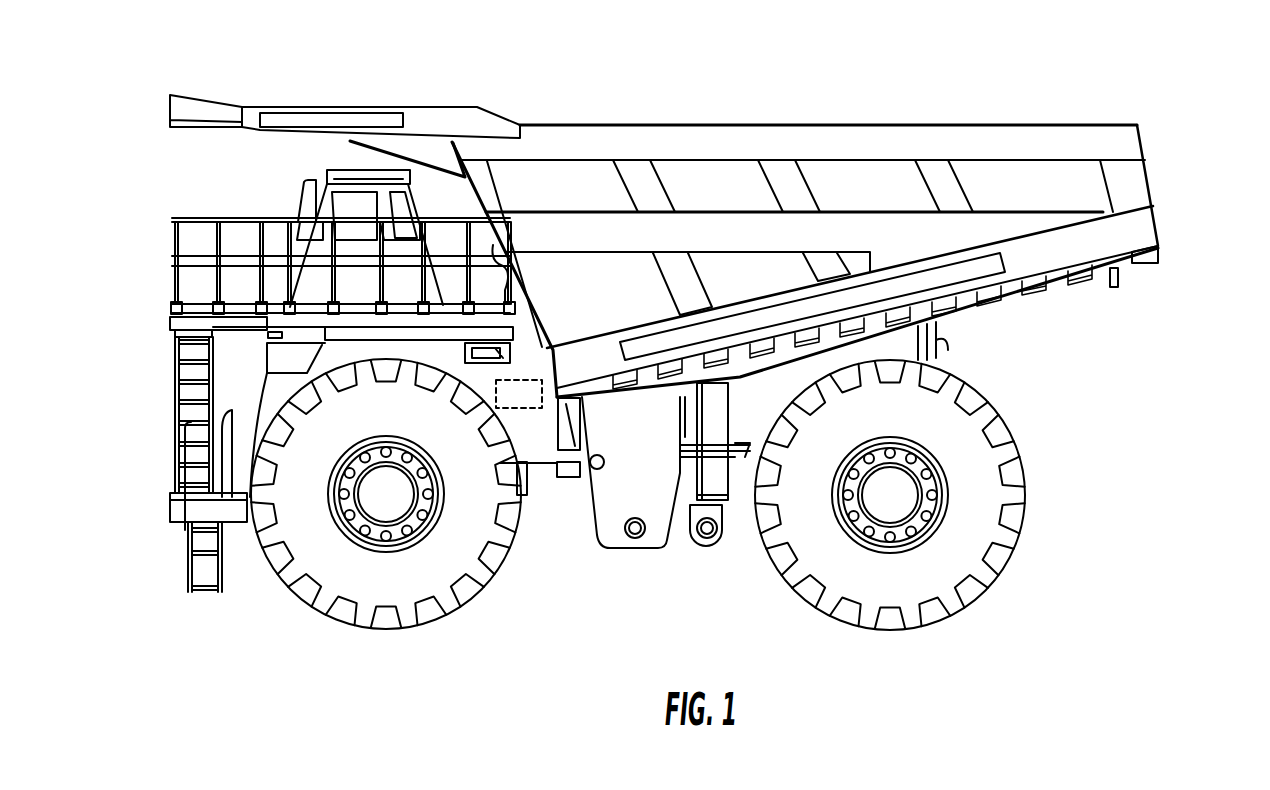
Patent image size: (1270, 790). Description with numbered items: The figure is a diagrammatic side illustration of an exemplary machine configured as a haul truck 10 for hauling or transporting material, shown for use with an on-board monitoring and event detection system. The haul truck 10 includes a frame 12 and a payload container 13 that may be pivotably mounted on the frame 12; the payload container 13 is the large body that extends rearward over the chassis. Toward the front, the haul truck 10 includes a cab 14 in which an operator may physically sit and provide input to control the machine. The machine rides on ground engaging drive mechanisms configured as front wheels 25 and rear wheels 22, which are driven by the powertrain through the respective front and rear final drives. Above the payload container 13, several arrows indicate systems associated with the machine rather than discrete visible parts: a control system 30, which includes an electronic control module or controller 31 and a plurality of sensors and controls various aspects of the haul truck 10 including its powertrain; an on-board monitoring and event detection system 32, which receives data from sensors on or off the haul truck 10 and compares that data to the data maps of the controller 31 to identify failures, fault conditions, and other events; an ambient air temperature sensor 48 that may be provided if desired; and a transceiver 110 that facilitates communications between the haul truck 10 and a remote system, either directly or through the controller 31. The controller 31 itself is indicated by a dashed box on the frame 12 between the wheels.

The haul truck 10 is at (1094, 75).
The frame 12 is at (527, 443).
The payload container 13 is at (703, 204).
The cab 14 is at (327, 180).
The rear wheels 22 is at (888, 632).
The front wheels 25 is at (383, 632).
The control system 30 is at (698, 90).
The controller 31 is at (510, 397).
The on-board monitoring and event detection system 32 is at (746, 90).
The ambient air temperature sensor 48 is at (794, 90).
The transceiver 110 is at (861, 90).